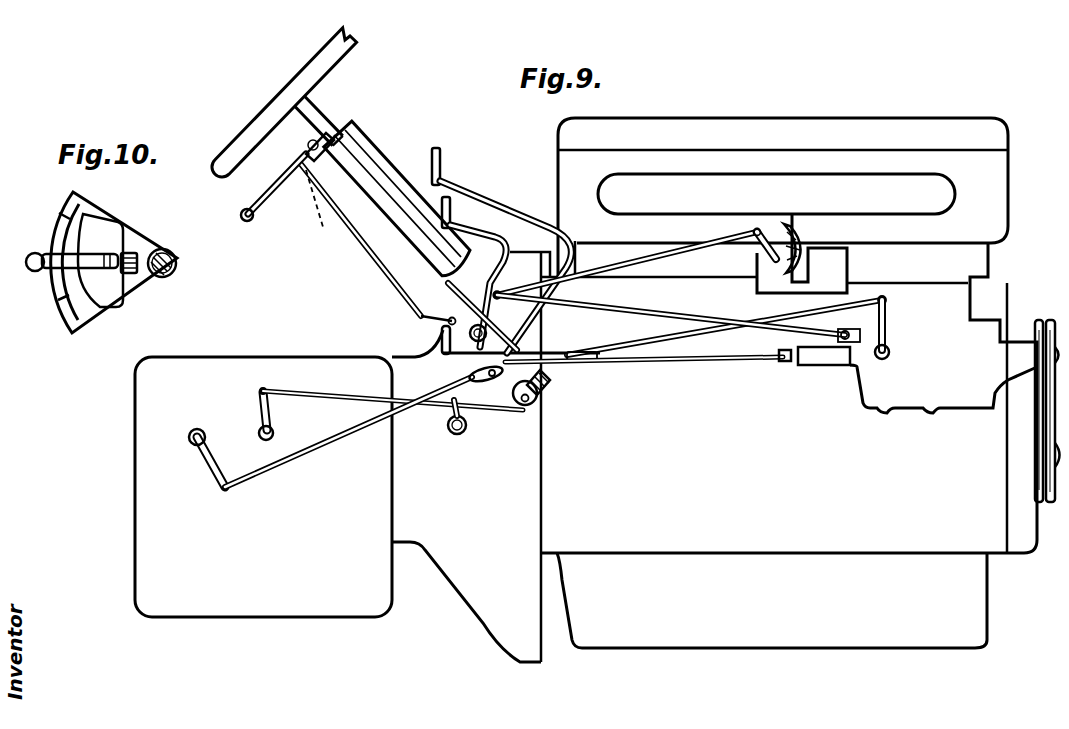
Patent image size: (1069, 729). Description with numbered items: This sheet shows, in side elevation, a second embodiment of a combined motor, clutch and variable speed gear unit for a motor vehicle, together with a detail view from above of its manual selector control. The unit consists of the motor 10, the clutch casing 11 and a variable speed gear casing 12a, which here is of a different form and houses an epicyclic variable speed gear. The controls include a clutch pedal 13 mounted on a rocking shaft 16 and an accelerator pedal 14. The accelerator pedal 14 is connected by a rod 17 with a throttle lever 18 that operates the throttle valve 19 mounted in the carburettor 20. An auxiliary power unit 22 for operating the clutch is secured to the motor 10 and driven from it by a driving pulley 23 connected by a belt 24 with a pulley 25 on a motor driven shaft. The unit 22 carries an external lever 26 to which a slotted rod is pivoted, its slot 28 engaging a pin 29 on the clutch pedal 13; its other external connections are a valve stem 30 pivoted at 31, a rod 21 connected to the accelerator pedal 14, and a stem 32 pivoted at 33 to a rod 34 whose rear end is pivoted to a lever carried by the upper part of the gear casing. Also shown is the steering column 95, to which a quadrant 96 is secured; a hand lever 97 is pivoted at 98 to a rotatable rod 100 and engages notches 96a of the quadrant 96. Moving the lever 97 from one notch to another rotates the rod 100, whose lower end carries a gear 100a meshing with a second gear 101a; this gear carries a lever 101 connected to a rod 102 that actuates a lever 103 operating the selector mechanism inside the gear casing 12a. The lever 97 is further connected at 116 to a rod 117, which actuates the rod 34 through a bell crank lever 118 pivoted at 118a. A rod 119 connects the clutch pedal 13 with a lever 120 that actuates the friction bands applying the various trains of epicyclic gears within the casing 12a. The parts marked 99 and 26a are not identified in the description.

In FIG. 9, the motor 10 is at (773, 390).
In FIG. 9, the clutch casing 11 is at (495, 612).
In FIG. 9, the variable speed gear casing 12a is at (289, 473).
In FIG. 9, the clutch pedal 13 is at (505, 230).
In FIG. 9, the accelerator pedal 14 is at (460, 215).
In FIG. 9, the rocking shaft 16 is at (452, 428).
In FIG. 9, the rod 17 is at (660, 262).
In FIG. 9, the throttle lever 18 is at (768, 250).
In FIG. 9, the throttle valve 19 is at (795, 248).
In FIG. 9, the carburettor 20 is at (762, 290).
In FIG. 9, the rod 21 is at (680, 293).
In FIG. 9, the auxiliary power unit 22 is at (943, 387).
In FIG. 9, the driving pulley 23 is at (1037, 345).
In FIG. 9, the belt 24 is at (1040, 405).
In FIG. 9, the pulley 25 is at (1040, 485).
In FIG. 9, the external lever 26 is at (888, 340).
In FIG. 9, the radiator fitting 26a is at (1052, 450).
In FIG. 9, the slot 28 is at (490, 378).
In FIG. 9, the pin 29 is at (470, 372).
In FIG. 9, the valve stem 30 is at (848, 340).
In FIG. 9, the pivot 31 is at (843, 340).
In FIG. 9, the stem 32 is at (784, 362).
In FIG. 9, the pivot 33 is at (765, 360).
In FIG. 9, the rod 34 is at (715, 325).
In FIG. 10, the steering column 95 is at (172, 252).
In FIG. 9, the steering column 95 is at (362, 140).
In FIG. 10, the quadrant 96 is at (121, 297).
In FIG. 9, the quadrant 96 is at (290, 192).
In FIG. 10, the notches 96a is at (40, 330).
In FIG. 10, the hand lever 97 is at (35, 265).
In FIG. 9, the hand lever 97 is at (248, 222).
In FIG. 10, the pivot 98 is at (132, 253).
In FIG. 9, the pivot 98 is at (343, 108).
In FIG. 9, the steering wheel 99 is at (308, 143).
In FIG. 9, the rotatable rod 100 is at (358, 170).
In FIG. 9, the gear 100a is at (548, 376).
In FIG. 9, the lever 101 is at (532, 403).
In FIG. 9, the second gear 101a is at (530, 397).
In FIG. 9, the rod 102 is at (510, 413).
In FIG. 9, the lever 103 is at (262, 398).
In FIG. 10, the connection 116 is at (107, 257).
In FIG. 9, the connection 116 is at (327, 210).
In FIG. 9, the rod 117 is at (385, 247).
In FIG. 9, the bell crank lever 118 is at (443, 338).
In FIG. 9, the pivot 118a is at (445, 318).
In FIG. 9, the rod 119 is at (360, 430).
In FIG. 9, the lever 120 is at (205, 462).